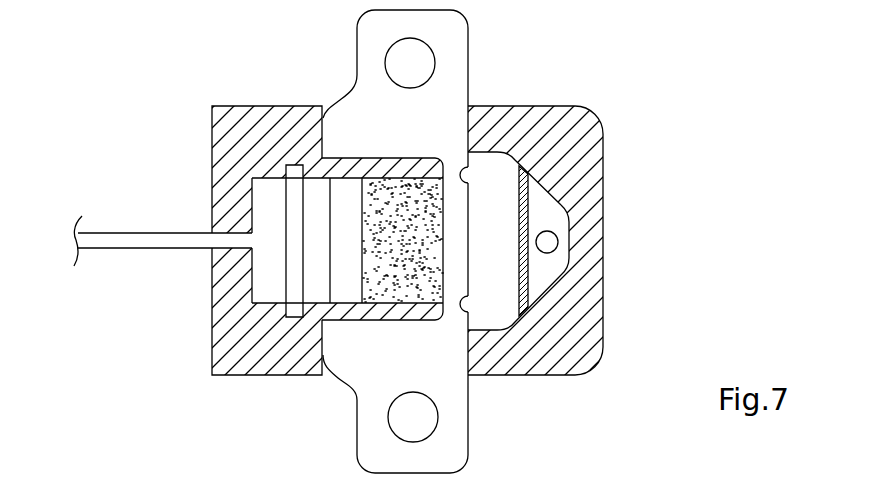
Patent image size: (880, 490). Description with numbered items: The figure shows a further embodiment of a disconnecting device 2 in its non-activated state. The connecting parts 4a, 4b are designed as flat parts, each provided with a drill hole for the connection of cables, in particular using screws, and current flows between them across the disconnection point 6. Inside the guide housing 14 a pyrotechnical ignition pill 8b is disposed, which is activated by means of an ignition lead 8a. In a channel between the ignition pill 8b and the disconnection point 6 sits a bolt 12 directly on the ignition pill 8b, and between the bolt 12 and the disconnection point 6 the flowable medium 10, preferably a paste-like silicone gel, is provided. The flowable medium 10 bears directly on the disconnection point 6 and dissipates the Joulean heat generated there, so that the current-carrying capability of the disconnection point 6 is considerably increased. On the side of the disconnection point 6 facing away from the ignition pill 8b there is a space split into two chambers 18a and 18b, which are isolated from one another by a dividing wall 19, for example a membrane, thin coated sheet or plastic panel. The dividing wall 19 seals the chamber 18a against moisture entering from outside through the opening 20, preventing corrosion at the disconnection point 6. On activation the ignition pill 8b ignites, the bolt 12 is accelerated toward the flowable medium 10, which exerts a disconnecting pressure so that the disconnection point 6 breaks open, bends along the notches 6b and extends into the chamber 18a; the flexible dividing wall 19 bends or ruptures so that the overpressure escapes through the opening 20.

The disconnecting device 2 is at (637, 88).
The connecting part 4a is at (452, 33).
The connecting part 4b is at (457, 447).
The disconnection point 6 is at (457, 263).
The notches 6b is at (463, 175).
The ignition lead 8a is at (125, 240).
The pyrotechnical ignition pill 8b is at (270, 192).
The flowable medium 10 is at (377, 278).
The bolt 12 is at (342, 192).
The guide housing 14 is at (575, 338).
The chamber 18a is at (505, 180).
The chamber 18b is at (547, 212).
The dividing wall 19 is at (525, 200).
The opening 20 is at (558, 245).